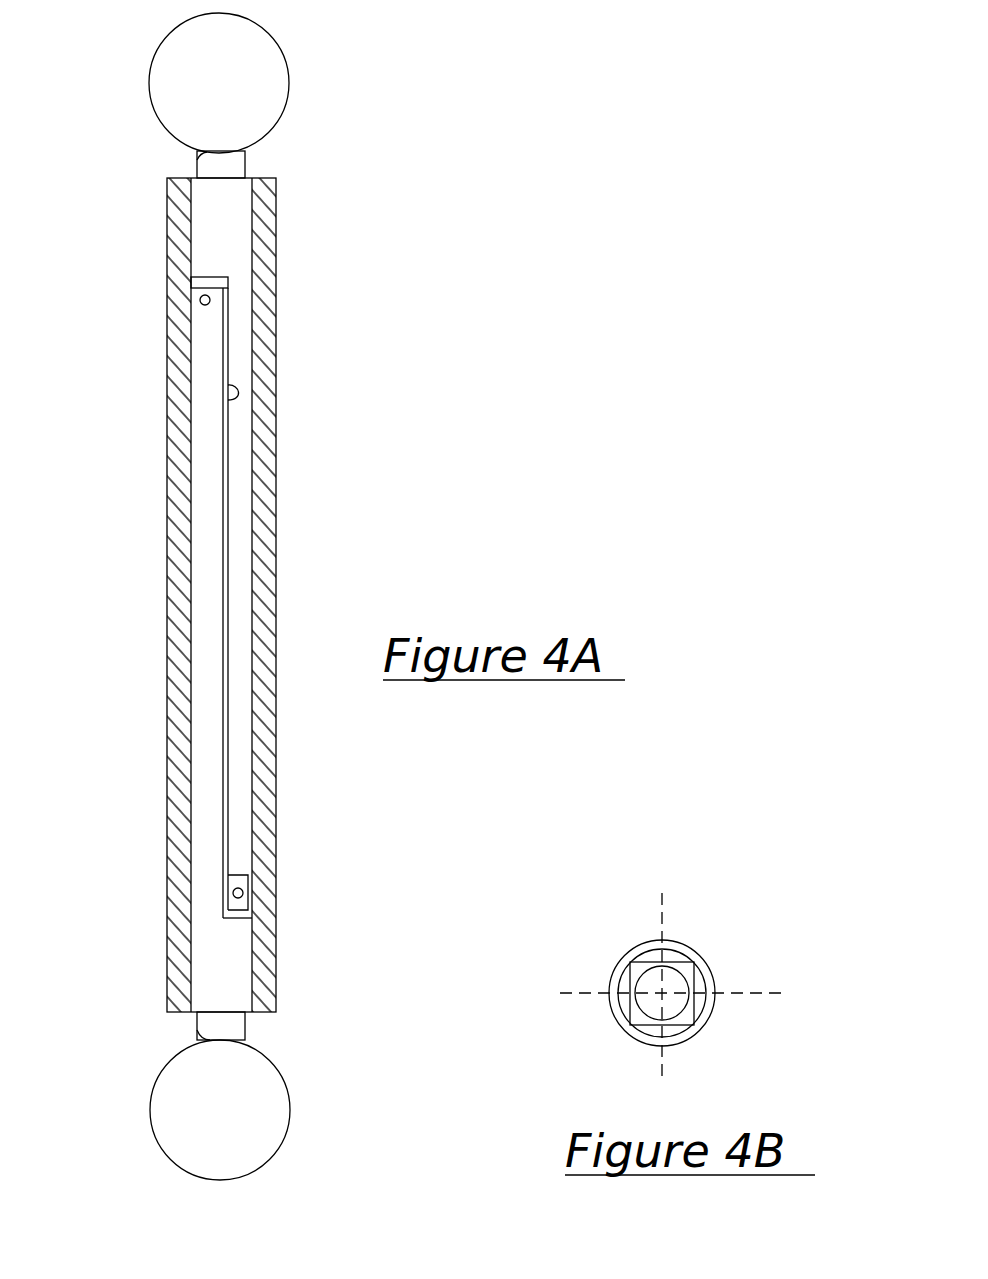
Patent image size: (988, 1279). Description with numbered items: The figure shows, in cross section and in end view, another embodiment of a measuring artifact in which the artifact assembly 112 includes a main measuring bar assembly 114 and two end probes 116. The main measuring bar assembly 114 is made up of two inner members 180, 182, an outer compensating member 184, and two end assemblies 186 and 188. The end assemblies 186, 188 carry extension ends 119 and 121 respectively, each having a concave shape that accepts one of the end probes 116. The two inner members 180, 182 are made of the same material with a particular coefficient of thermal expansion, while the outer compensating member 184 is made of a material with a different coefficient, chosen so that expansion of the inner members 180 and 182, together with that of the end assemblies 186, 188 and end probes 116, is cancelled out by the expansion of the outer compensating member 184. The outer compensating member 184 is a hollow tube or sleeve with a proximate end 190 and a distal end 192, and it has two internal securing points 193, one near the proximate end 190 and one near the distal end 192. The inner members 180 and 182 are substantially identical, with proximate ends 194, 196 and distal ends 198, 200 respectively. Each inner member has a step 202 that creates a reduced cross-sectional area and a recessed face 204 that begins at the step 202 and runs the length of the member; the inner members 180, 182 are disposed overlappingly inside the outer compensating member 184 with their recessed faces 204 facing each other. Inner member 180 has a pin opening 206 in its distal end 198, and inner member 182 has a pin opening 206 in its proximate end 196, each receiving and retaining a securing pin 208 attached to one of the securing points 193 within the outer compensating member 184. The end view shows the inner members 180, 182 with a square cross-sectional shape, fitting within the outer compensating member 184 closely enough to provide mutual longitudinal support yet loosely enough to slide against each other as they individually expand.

In FIG. 4A, the artifact assembly 112 is at (328, 460).
In FIG. 4A, the main measuring bar assembly 114 is at (328, 410).
In FIG. 4B, the main measuring bar assembly 114 is at (727, 956).
In FIG. 4A, the end probes 116 is at (289, 81).
In FIG. 4A, the extension end 119 is at (212, 1027).
In FIG. 4A, the extension end 121 is at (203, 160).
In FIG. 4A, the inner member 180 is at (240, 955).
In FIG. 4B, the inner member 180 is at (635, 1013).
In FIG. 4A, the inner member 182 is at (243, 753).
In FIG. 4A, the outer compensating member 184 is at (263, 585).
In FIG. 4A, the end assembly 186 is at (240, 1025).
In FIG. 4B, the end assembly 186 is at (640, 988).
In FIG. 4A, the end assembly 188 is at (238, 165).
In FIG. 4A, the proximate end 190 is at (166, 985).
In FIG. 4A, the distal end 192 is at (166, 202).
In FIG. 4A, the internal securing points 193 is at (193, 293).
In FIG. 4A, the proximate end 194 is at (210, 980).
In FIG. 4A, the proximate end 196 is at (240, 875).
In FIG. 4A, the distal end 198 is at (203, 318).
In FIG. 4A, the distal end 200 is at (240, 217).
In FIG. 4A, the step 202 is at (205, 277).
In FIG. 4A, the recessed face 204 is at (227, 363).
In FIG. 4A, the pin opening 206 is at (210, 300).
In FIG. 4A, the securing pins 208 is at (200, 302).